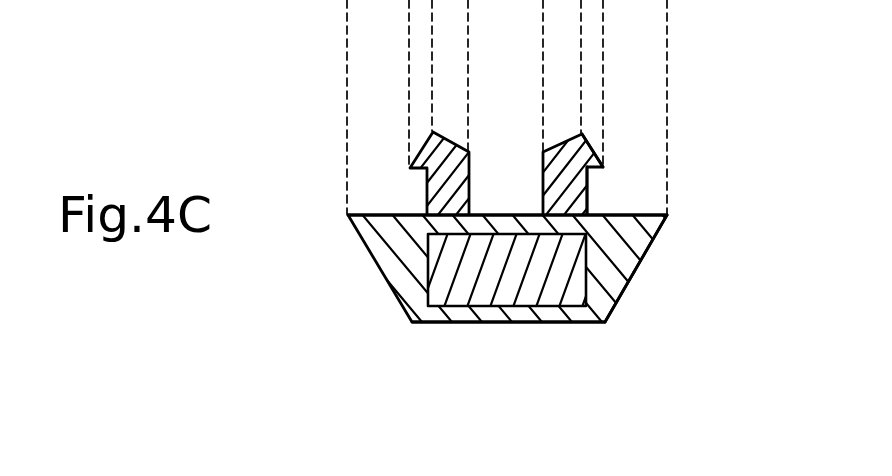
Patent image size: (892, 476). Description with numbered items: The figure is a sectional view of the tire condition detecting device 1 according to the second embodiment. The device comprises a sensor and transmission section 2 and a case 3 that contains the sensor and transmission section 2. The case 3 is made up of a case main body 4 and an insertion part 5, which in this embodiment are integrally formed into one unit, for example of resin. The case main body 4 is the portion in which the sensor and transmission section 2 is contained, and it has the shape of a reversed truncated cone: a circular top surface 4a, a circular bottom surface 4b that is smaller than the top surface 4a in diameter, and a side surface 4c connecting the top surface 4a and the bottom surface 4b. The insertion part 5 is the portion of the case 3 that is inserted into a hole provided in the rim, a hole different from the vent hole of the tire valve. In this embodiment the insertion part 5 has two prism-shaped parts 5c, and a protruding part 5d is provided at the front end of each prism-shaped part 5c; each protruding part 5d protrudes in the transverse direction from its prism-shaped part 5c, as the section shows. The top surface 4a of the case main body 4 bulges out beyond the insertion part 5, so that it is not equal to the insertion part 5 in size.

The tire condition detecting device 1 is at (520, 114).
The sensor and transmission section 2 is at (588, 323).
The case 3 is at (623, 293).
The case main body 4 is at (381, 271).
The top surface 4a is at (617, 215).
The bottom surface 4b is at (495, 323).
The side surface 4c is at (637, 272).
The insertion part 5 is at (425, 155).
The prism-shaped part 5c is at (573, 185).
The protruding part 5d is at (600, 162).